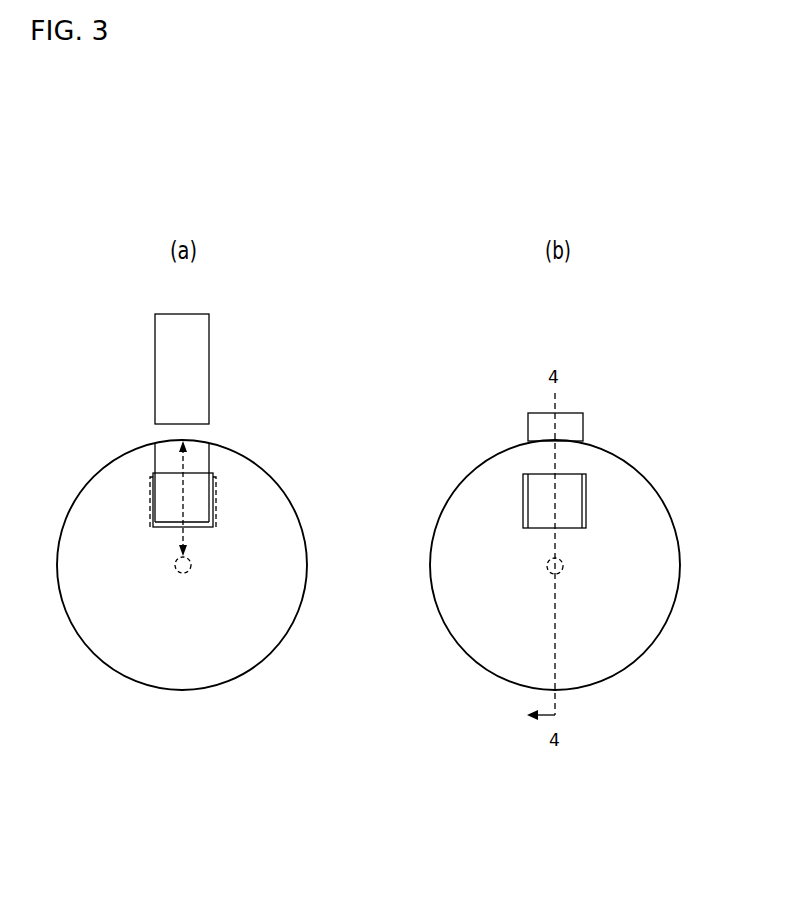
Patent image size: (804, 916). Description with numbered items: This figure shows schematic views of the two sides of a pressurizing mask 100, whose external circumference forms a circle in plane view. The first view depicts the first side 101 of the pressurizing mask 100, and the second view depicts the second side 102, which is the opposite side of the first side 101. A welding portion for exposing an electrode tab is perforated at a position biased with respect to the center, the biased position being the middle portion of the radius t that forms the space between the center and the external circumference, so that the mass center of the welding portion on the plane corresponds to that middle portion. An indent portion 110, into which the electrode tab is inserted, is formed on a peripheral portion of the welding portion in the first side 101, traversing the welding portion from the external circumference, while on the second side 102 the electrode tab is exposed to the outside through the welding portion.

The pressurizing mask 100 is at (193, 546).
The first side 101 is at (256, 632).
The second side 102 is at (615, 653).
The indent portion 110 is at (197, 449).
The radius t is at (180, 498).